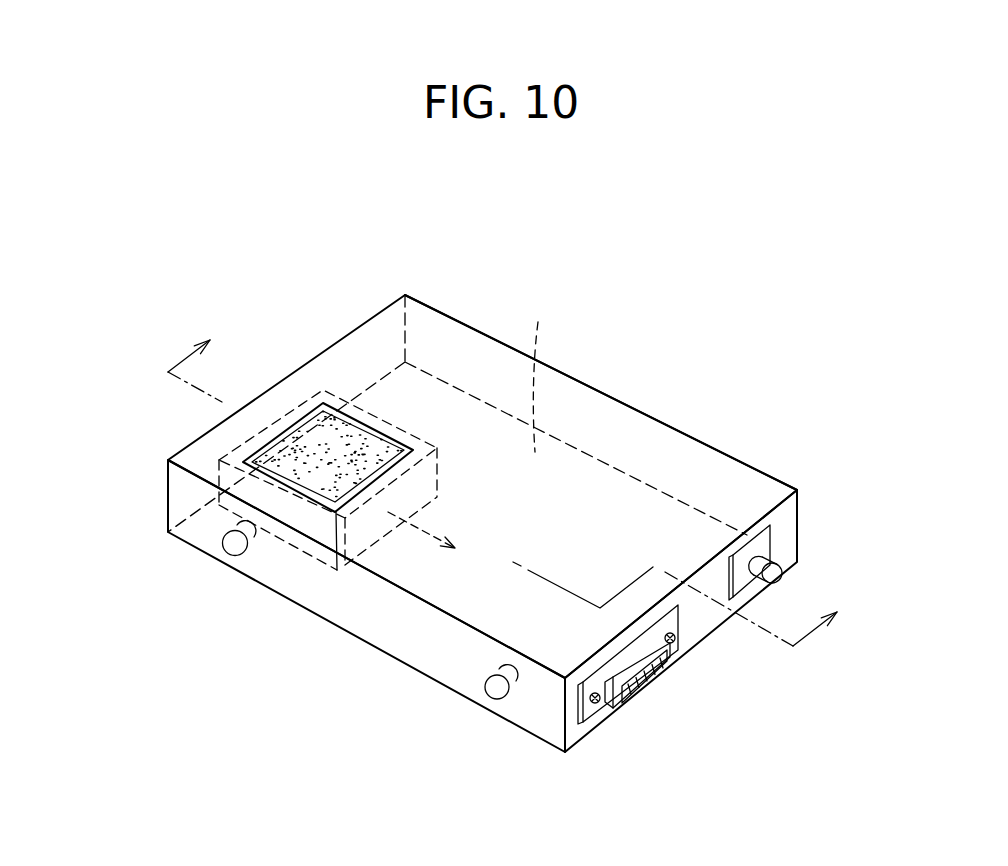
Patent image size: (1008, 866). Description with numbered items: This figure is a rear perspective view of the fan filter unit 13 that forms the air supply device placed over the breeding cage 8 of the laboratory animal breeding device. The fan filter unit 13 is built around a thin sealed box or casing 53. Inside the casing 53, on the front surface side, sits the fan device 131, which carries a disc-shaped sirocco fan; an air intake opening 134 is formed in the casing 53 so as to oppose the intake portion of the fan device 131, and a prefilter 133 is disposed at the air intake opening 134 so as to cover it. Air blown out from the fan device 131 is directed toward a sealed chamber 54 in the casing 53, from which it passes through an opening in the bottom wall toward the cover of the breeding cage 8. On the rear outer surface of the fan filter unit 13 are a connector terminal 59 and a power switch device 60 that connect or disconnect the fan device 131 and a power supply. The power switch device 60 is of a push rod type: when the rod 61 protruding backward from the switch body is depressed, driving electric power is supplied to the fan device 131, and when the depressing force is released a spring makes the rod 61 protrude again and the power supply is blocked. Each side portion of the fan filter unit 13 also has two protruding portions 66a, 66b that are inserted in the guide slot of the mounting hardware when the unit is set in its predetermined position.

The fan filter unit 13 is at (601, 388).
The sealed box (casing) 53 is at (643, 447).
The sealed chamber 54 is at (538, 371).
The connector terminal 59 is at (608, 702).
The power switch device 60 is at (770, 537).
The rod 61 is at (780, 576).
The protruding portion 66a is at (232, 548).
The protruding portion 66b is at (495, 692).
The fan device 131 is at (229, 477).
The prefilter 133 is at (347, 443).
The air intake opening 134 is at (318, 420).
The breeding cage 8 is at (515, 481).